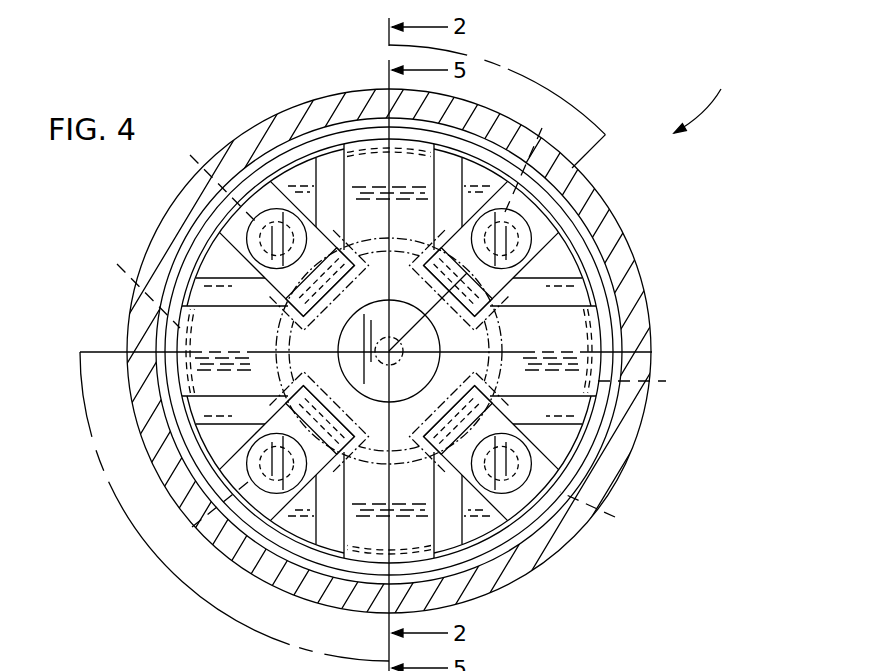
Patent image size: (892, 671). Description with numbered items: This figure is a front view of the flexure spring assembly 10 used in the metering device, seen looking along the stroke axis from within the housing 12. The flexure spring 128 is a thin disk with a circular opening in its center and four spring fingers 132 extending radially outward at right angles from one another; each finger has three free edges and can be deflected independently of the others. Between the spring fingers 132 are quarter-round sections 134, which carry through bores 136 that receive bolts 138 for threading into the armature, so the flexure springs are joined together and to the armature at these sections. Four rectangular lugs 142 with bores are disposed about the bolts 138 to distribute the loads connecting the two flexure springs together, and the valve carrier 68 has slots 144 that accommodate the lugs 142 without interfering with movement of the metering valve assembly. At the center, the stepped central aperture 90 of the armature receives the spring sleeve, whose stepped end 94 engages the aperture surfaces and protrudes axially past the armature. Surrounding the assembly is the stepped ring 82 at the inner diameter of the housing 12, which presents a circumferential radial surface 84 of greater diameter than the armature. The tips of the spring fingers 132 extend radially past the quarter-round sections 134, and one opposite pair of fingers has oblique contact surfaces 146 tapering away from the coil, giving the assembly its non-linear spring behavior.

The motor assembly 10 is at (702, 99).
The housing 12 is at (638, 322).
The valve carrier 68 is at (503, 376).
The ring 82 is at (565, 215).
The circumferential radial surface 84 is at (595, 275).
The stepped central aperture 90 is at (441, 337).
The stepped end 94 is at (435, 356).
The flexure spring 128 is at (481, 372).
The spring fingers 132 is at (428, 176).
The quarter-round sections 134 is at (223, 263).
The through bores 136 is at (409, 330).
The bolts 138 is at (266, 268).
The rectangular lugs 142 is at (342, 244).
The slots 144 is at (402, 242).
The oblique contact surfaces 146 is at (400, 305).